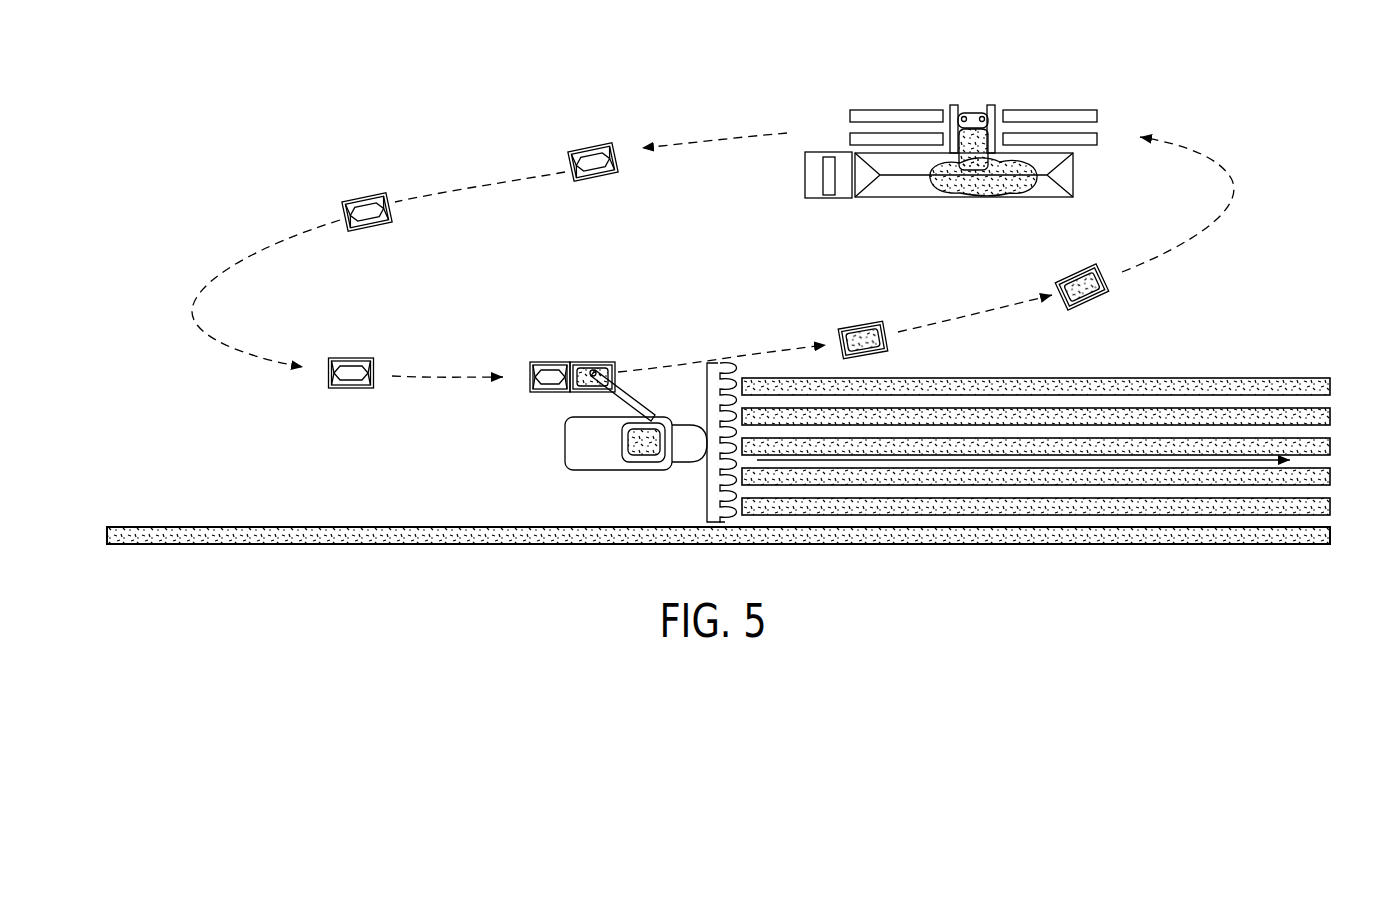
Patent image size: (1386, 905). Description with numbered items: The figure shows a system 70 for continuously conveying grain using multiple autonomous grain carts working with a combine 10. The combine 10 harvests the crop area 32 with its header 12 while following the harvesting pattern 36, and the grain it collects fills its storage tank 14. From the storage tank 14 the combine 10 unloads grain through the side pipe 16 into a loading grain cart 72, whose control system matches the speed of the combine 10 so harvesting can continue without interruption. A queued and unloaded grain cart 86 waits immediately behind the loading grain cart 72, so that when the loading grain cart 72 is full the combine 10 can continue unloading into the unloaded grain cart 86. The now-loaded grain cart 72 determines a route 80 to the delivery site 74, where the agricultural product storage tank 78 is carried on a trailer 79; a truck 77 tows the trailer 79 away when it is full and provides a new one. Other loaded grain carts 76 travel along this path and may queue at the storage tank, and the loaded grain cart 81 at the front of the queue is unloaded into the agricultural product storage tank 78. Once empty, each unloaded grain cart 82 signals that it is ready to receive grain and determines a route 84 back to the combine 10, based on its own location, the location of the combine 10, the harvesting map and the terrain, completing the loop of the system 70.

The agricultural vehicle 10 is at (546, 439).
The header 12 is at (733, 360).
The storage tank 14 is at (643, 454).
The side pipe 16 is at (613, 400).
The crop area 32 is at (1195, 450).
The harvesting pattern 36 is at (1030, 459).
The system 70 is at (724, 50).
The loading grain cart 72 is at (583, 362).
The agricultural product storage tank location 74 is at (970, 112).
The loaded grain carts 76 is at (862, 345).
The truck 77 is at (828, 199).
The agricultural product storage tank 78 is at (893, 186).
The trailer 79 is at (1021, 197).
The route 80 is at (678, 366).
The loaded grain cart 81 is at (952, 140).
The unloaded grain cart 82 is at (590, 147).
The route 84 is at (718, 138).
The unloaded grain cart 86 is at (553, 362).